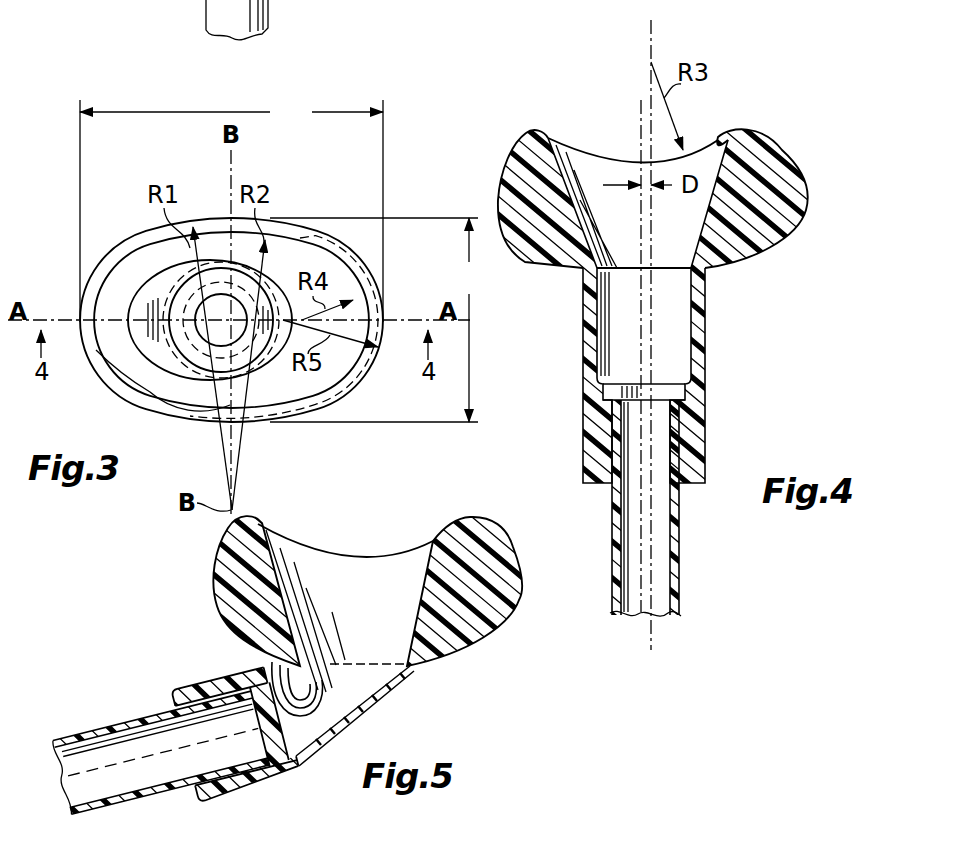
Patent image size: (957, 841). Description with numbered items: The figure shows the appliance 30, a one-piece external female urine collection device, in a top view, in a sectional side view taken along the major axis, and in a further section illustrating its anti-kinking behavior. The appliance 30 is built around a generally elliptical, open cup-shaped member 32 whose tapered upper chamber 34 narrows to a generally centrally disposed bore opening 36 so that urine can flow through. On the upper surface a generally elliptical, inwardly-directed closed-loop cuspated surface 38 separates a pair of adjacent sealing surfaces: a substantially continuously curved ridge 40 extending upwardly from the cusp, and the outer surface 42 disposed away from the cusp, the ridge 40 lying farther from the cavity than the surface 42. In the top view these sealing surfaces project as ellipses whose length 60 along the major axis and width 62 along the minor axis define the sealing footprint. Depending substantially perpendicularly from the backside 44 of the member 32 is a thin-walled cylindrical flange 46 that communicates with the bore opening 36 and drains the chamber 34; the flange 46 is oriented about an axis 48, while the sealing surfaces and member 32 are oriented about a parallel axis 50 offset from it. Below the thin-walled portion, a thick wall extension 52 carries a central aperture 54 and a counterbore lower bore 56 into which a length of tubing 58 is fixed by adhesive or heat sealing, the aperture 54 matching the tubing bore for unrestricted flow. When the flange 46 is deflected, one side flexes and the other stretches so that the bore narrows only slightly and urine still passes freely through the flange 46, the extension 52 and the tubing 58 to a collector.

In FIG. 3, the appliance 30 is at (231, 332).
In FIG. 4, the appliance 30 is at (478, 420).
In FIG. 4, the cup-shaped member 32 is at (478, 420).
In FIG. 5, the cup-shaped member 32 is at (478, 420).
In FIG. 4, the tapered upper chamber 34 is at (711, 150).
In FIG. 5, the tapered upper chamber 34 is at (428, 556).
In FIG. 4, the bore opening 36 is at (693, 270).
In FIG. 3, the cuspated surface 38 is at (340, 263).
In FIG. 4, the cuspated surface 38 is at (530, 152).
In FIG. 3, the curved ridge 40 is at (231, 308).
In FIG. 4, the curved ridge 40 is at (541, 131).
In FIG. 5, the curved ridge 40 is at (468, 520).
In FIG. 3, the outer sealing surface 42 is at (215, 224).
In FIG. 4, the outer sealing surface 42 is at (517, 164).
In FIG. 4, the backside 44 is at (557, 264).
In FIG. 4, the cylindrical flange 46 is at (705, 310).
In FIG. 5, the cylindrical flange 46 is at (383, 697).
In FIG. 3, the flange axis 48 is at (219, 322).
In FIG. 4, the flange axis 48 is at (641, 126).
In FIG. 3, the sealing surface axis 50 is at (229, 322).
In FIG. 4, the sealing surface axis 50 is at (651, 45).
In FIG. 4, the thick wall extension 52 is at (705, 435).
In FIG. 5, the thick wall extension 52 is at (240, 790).
In FIG. 4, the central aperture 54 is at (658, 385).
In FIG. 4, the counterbore lower bore 56 is at (672, 494).
In FIG. 4, the tubing 58 is at (679, 582).
In FIG. 5, the tubing 58 is at (136, 792).
In FIG. 3, the length 60 is at (231, 210).
In FIG. 3, the width 62 is at (377, 320).